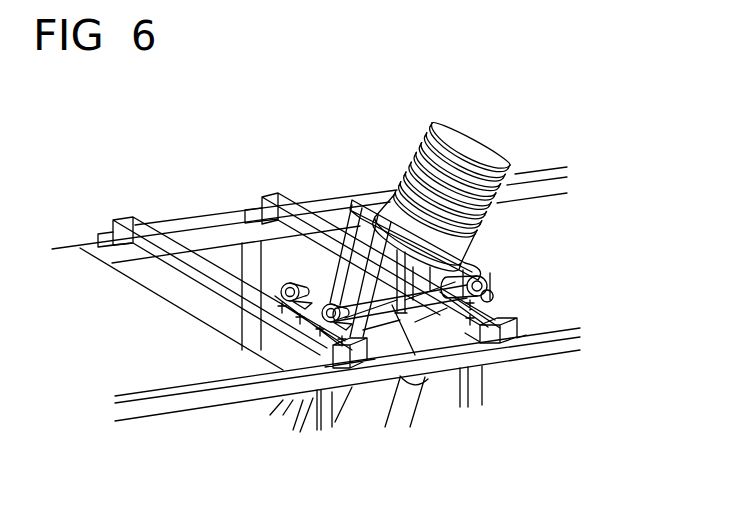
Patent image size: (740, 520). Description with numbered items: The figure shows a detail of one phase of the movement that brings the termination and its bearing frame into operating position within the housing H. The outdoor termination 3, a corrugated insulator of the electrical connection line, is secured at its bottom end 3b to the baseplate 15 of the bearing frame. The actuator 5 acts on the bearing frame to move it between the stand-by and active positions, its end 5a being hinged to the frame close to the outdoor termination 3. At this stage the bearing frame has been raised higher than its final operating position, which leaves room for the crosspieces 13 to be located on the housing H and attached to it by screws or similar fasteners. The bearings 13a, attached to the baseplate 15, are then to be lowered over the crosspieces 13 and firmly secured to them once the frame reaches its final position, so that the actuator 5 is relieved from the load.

The outdoor termination 3 is at (490, 222).
The bottom end of the outdoor termination 3b is at (397, 217).
The actuator 5 is at (415, 397).
The end of the actuator 5a is at (447, 280).
The crosspieces 13 is at (151, 233).
The bearings 13a is at (297, 287).
The baseplate 15 is at (480, 268).
The housing H is at (157, 387).